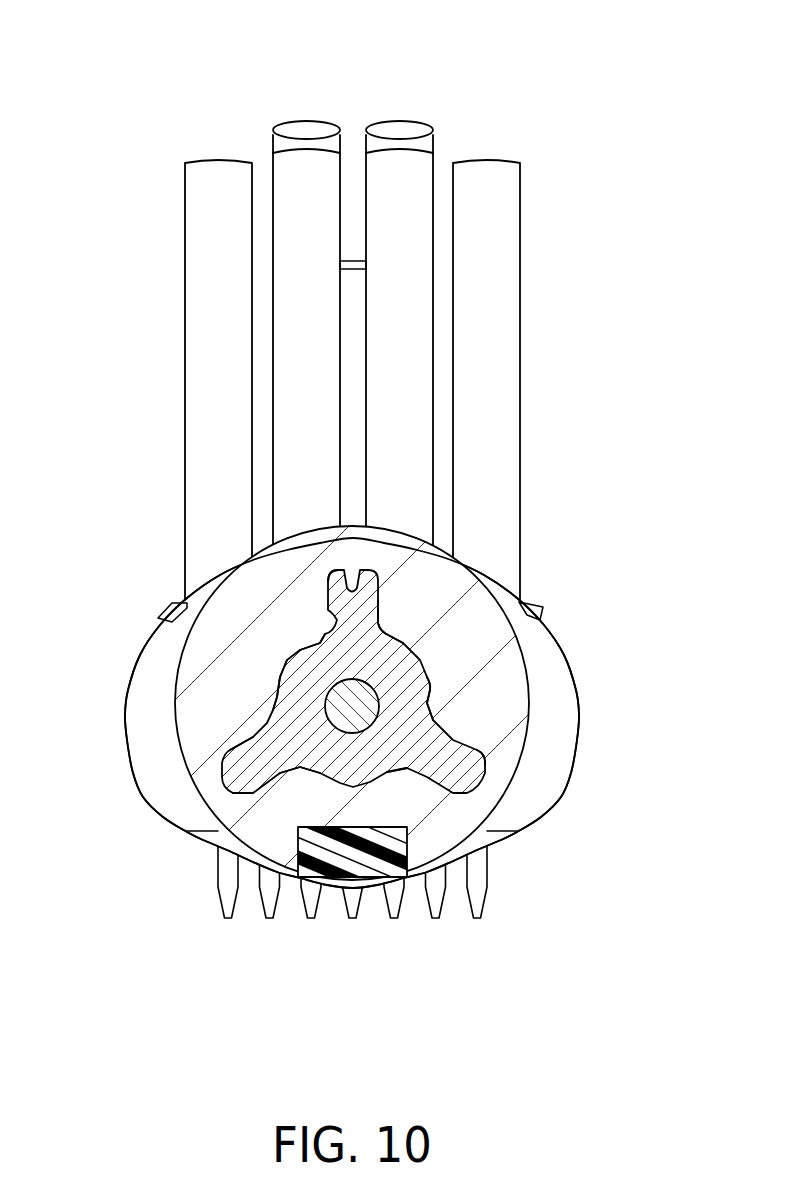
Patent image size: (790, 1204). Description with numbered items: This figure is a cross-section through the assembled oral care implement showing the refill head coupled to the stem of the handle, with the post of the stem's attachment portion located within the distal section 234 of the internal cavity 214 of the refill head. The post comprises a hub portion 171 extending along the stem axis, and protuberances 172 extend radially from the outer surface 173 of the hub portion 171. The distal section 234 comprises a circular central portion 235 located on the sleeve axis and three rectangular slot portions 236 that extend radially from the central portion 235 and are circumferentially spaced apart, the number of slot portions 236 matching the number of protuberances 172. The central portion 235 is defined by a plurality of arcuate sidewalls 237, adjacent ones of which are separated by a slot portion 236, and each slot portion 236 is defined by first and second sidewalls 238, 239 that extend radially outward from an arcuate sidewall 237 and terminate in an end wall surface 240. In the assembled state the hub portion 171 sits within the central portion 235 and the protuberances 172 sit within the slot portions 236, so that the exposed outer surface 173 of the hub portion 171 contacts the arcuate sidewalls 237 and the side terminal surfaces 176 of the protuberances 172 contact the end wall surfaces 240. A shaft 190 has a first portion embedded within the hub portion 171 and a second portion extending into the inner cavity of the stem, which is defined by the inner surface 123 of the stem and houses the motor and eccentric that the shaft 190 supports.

The side terminal surface 176 is at (350, 584).
The end wall surface 240 is at (360, 582).
The protuberance 172 is at (378, 572).
The second sidewall 239 is at (381, 627).
The internal cavity 214 is at (408, 650).
The distal section 234 is at (445, 848).
The hub portion 171 is at (397, 683).
The arcuate sidewall 237 is at (432, 684).
The shaft 190 is at (352, 704).
The slot portion 236 is at (324, 587).
The first sidewall 238 is at (307, 643).
The inner surface 123 is at (277, 671).
The central portion 235 is at (321, 772).
The outer surface 173 is at (354, 790).